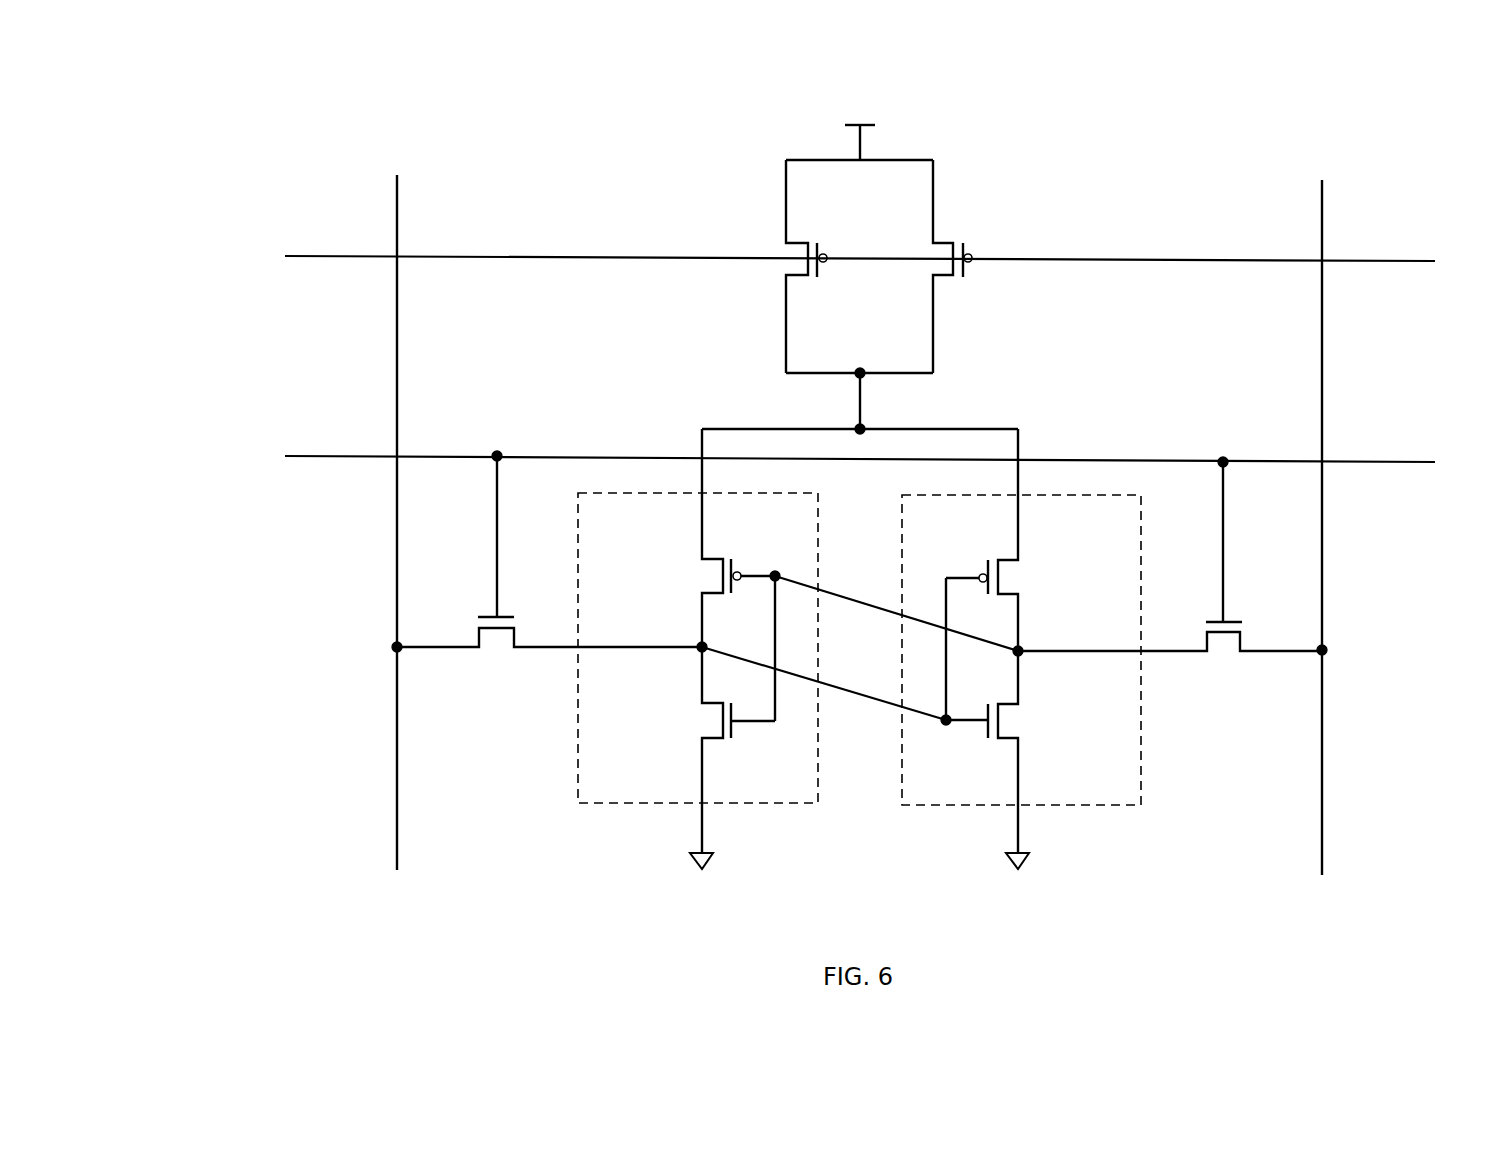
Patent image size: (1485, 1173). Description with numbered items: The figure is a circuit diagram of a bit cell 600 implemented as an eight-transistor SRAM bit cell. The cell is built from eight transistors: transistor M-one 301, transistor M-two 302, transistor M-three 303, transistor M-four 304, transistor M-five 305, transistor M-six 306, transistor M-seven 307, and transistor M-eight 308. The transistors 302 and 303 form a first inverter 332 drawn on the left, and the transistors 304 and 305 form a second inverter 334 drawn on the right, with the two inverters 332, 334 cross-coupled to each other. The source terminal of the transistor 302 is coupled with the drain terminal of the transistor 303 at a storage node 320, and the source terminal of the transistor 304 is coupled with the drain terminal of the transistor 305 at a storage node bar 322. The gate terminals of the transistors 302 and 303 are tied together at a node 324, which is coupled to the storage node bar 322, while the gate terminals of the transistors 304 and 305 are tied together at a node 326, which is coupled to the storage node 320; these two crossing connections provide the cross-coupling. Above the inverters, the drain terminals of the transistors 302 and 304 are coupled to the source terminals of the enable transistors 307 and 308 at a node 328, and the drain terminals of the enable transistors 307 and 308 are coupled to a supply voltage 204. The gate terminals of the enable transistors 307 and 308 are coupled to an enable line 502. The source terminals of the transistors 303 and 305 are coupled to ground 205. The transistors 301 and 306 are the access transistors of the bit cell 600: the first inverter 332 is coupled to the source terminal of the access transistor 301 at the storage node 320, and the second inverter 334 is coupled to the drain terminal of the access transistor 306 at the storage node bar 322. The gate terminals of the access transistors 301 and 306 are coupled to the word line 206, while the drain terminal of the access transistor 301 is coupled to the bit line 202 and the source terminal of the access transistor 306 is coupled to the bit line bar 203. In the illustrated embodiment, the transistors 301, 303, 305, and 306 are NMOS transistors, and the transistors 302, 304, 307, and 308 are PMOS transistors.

The bit cell 600 is at (222, 128).
The BL 202 is at (397, 494).
The BLB 203 is at (1323, 498).
The VDD 204 is at (859, 113).
The GND 205 is at (860, 892).
The WL 206 is at (836, 457).
The enable line 502 is at (836, 257).
The transistor M1 301 is at (547, 584).
The transistor M2 302 is at (713, 538).
The transistor M3 303 is at (712, 750).
The transistor M4 304 is at (1007, 540).
The transistor M5 305 is at (1007, 752).
The transistor M6 306 is at (1172, 588).
The transistor M7 307 is at (794, 266).
The transistor M8 308 is at (939, 266).
The storage node 320 is at (700, 646).
The storage node bar 322 is at (1020, 650).
The node 324 is at (775, 573).
The node 326 is at (946, 736).
The node 328 is at (860, 370).
The first inverter 332 is at (578, 777).
The second inverter 334 is at (1141, 778).